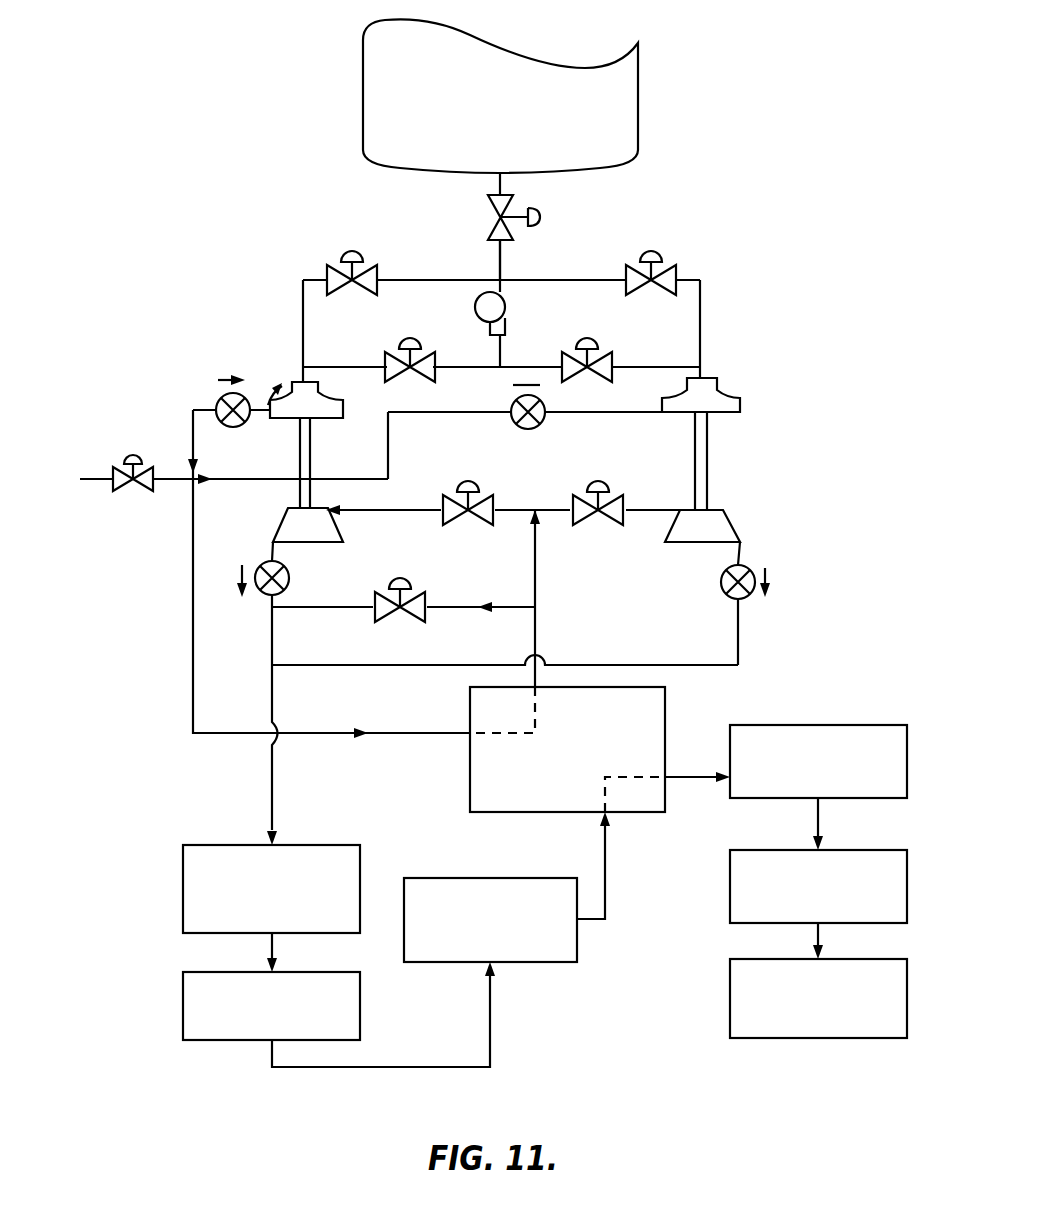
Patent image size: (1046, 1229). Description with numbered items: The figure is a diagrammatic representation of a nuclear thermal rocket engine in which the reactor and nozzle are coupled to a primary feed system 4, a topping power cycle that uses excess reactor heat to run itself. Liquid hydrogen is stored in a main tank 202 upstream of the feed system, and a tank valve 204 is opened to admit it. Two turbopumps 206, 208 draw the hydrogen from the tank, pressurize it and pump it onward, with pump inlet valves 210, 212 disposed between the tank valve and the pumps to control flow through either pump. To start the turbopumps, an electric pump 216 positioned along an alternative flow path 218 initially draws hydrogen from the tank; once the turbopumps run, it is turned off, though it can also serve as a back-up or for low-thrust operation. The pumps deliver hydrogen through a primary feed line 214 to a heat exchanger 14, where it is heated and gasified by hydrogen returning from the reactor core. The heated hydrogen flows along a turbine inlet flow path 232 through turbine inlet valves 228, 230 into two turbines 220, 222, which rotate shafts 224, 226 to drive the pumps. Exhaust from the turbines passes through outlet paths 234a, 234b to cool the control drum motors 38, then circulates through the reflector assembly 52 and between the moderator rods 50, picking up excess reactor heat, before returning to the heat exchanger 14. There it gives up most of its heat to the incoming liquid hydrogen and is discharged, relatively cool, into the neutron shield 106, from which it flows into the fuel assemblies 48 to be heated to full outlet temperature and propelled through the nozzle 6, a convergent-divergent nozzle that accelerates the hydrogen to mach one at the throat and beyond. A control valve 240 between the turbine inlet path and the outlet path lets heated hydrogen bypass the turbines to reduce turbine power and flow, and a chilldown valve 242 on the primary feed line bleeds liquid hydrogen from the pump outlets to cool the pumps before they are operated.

The primary feed system 4 is at (184, 170).
The nozzle 6 is at (890, 959).
The heat exchanger 14 is at (668, 707).
The control drum motors 38 is at (333, 845).
The fuel assemblies 48 is at (890, 850).
The moderator rods 50 is at (525, 878).
The reflector assembly 52 is at (340, 972).
The neutron shield 106 is at (867, 725).
The main tank 202 is at (363, 105).
The tank valve 204 is at (493, 233).
The turbopump 206 is at (297, 380).
The turbopump 208 is at (722, 388).
The pump inlet valve 210 is at (334, 264).
The pump inlet valve 212 is at (664, 267).
The primary feed line 214 is at (193, 597).
The electric pump 216 is at (507, 314).
The alternative flow path 218 is at (438, 364).
The turbine 220 is at (282, 541).
The turbine 222 is at (735, 530).
The rotating shaft 224 is at (300, 462).
The rotating shaft 226 is at (710, 469).
The turbine inlet valve 228 is at (456, 494).
The turbine inlet valve 230 is at (614, 494).
The turbine inlet flow path 232 is at (538, 623).
The turbine outlet path 234a is at (275, 794).
The turbine outlet path 234b is at (742, 629).
The control valve 240 is at (372, 603).
The chilldown valve 242 is at (128, 458).